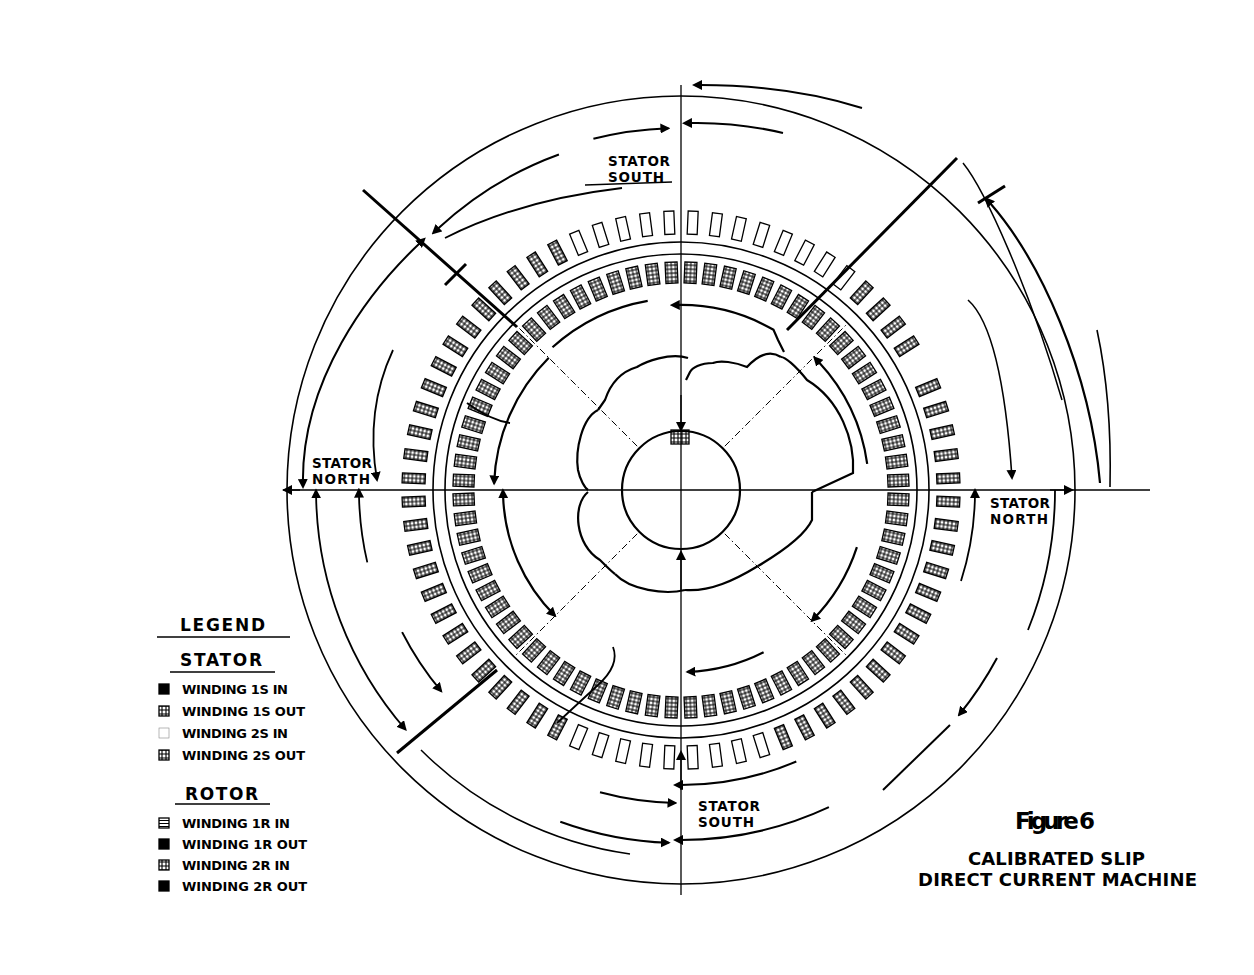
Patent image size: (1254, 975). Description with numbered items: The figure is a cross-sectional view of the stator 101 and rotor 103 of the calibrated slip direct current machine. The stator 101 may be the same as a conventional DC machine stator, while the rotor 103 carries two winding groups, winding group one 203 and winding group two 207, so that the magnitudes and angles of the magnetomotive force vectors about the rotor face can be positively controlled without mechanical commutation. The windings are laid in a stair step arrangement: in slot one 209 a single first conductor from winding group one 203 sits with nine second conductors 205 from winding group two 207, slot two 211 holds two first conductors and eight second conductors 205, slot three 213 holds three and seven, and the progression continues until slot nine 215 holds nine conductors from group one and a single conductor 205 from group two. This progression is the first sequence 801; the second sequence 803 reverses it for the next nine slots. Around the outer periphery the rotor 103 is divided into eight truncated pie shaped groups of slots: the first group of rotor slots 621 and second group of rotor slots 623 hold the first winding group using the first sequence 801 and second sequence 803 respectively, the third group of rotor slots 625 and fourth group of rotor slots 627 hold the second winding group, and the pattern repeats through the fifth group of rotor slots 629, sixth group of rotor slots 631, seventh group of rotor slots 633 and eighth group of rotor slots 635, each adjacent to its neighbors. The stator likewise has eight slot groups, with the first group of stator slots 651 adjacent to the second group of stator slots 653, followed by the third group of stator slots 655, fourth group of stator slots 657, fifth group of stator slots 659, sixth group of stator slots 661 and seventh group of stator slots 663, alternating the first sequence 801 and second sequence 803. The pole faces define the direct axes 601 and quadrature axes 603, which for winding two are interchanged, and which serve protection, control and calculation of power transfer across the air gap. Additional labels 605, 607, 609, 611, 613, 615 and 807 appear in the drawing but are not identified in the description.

The stator 101 is at (990, 240).
The rotor 103 is at (681, 484).
The winding group one 203 is at (803, 243).
The second conductor 205 is at (905, 373).
The winding group two 207 is at (808, 254).
The slot one 209 is at (720, 187).
The slot two 211 is at (740, 197).
The slot three 213 is at (762, 208).
The slot nine 215 is at (888, 277).
The direct axes 601 is at (684, 336).
The quadrature axes 603 is at (1100, 331).
The stator pole section 605 is at (1100, 564).
The stator pole section 607 is at (857, 748).
The stator pole section 609 is at (520, 758).
The stator pole section 611 is at (360, 538).
The stator pole section 613 is at (513, 425).
The stator pole section 615 is at (582, 340).
The first group of rotor slots 621 is at (1020, 124).
The second group of rotor slots 623 is at (816, 424).
The third group of rotor slots 625 is at (785, 529).
The fourth group of rotor slots 627 is at (721, 570).
The fifth group of rotor slots 629 is at (650, 573).
The sixth group of rotor slots 631 is at (604, 533).
The seventh group of rotor slots 633 is at (601, 450).
The eighth group of rotor slots 635 is at (643, 386).
The first group of stator slots 651 is at (847, 140).
The second group of stator slots 653 is at (1022, 343).
The third group of stator slots 655 is at (1008, 560).
The fourth group of stator slots 657 is at (940, 745).
The fifth group of stator slots 659 is at (610, 784).
The sixth group of stator slots 661 is at (406, 643).
The seventh group of stator slots 663 is at (389, 443).
The first sequence 801 is at (608, 464).
The second sequence 803 is at (738, 484).
The flux direction arrow 807 is at (997, 672).